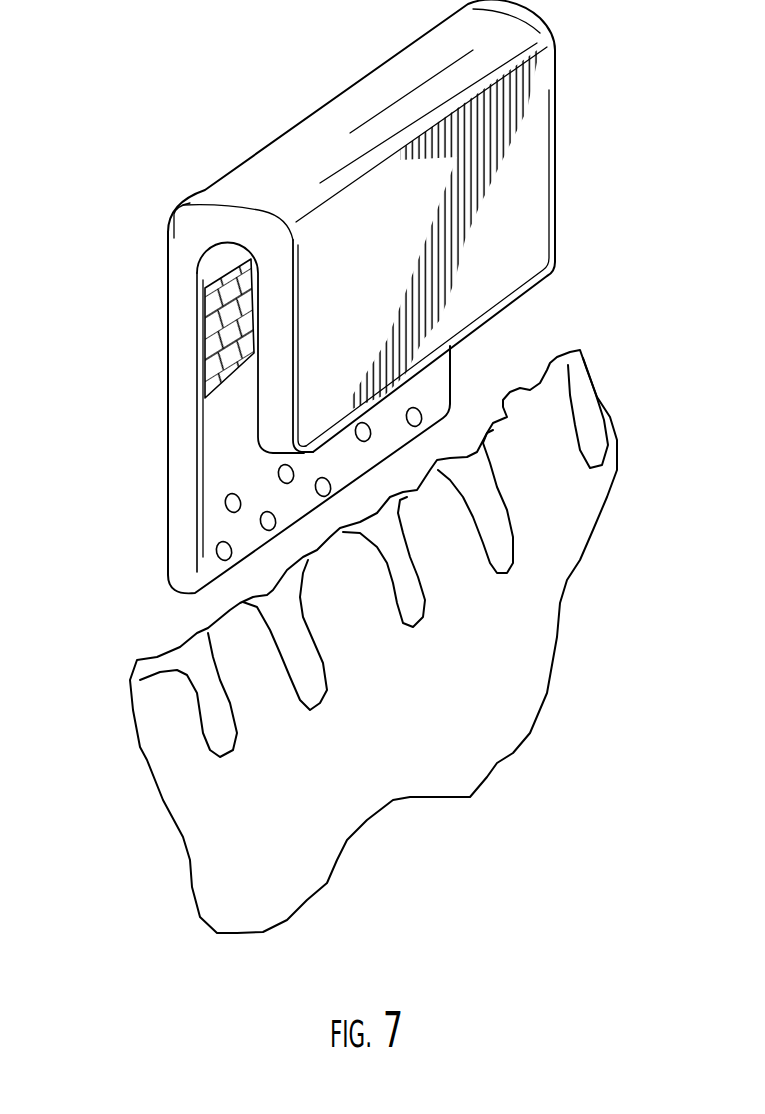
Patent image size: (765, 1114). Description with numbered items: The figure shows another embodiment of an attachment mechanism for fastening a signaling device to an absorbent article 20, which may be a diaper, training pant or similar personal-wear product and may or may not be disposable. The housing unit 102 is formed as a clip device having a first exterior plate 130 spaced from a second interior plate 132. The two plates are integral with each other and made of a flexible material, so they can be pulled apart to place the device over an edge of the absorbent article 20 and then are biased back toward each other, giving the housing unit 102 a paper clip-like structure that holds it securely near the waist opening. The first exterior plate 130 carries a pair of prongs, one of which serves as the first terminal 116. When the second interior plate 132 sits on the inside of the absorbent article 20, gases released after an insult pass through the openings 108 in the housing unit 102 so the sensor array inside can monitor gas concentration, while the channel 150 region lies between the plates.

The housing unit 102 is at (533, 118).
The first exterior plate 130 is at (533, 228).
The first terminal 116 is at (207, 303).
The second interior plate 132 is at (175, 437).
The channel 150 is at (238, 368).
The openings 108 is at (216, 551).
The absorbent article 20 is at (153, 782).